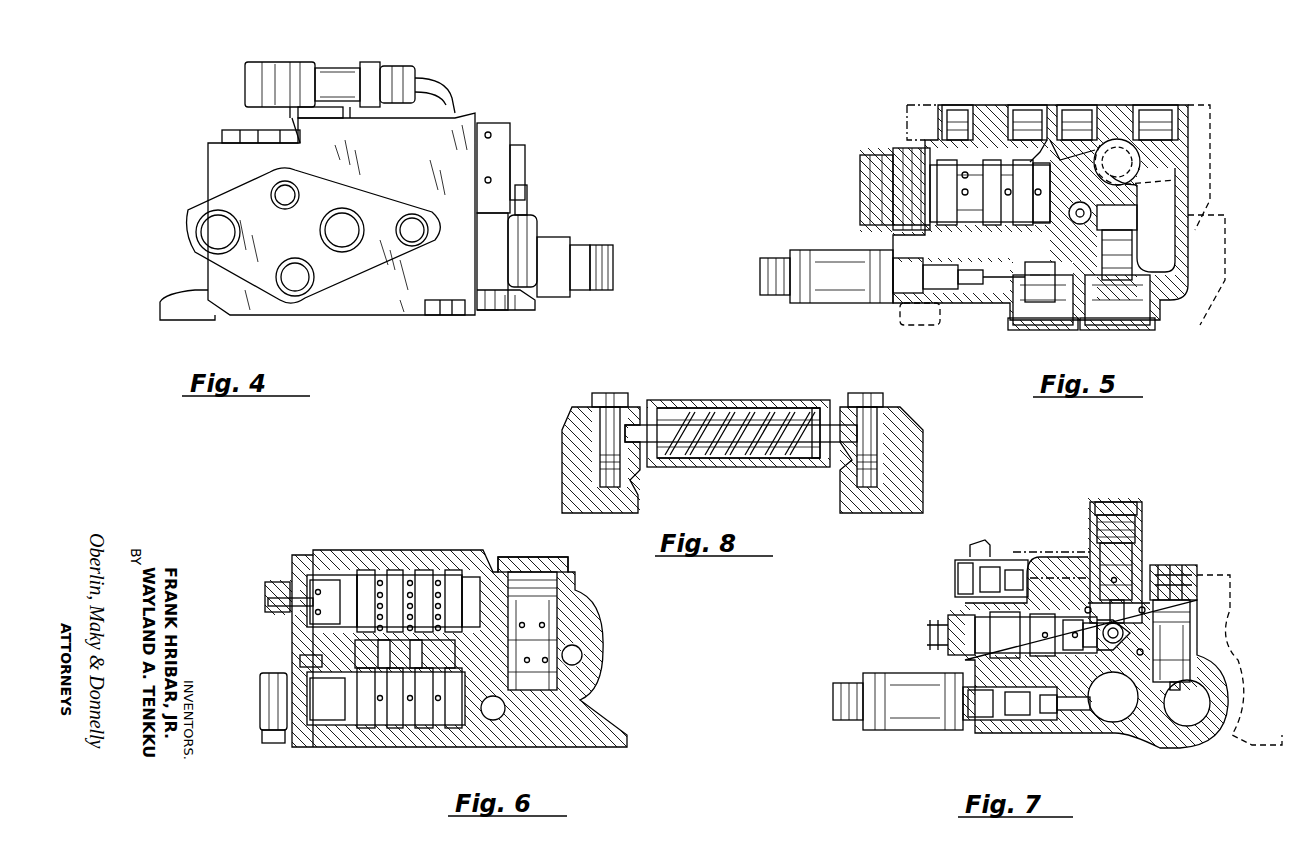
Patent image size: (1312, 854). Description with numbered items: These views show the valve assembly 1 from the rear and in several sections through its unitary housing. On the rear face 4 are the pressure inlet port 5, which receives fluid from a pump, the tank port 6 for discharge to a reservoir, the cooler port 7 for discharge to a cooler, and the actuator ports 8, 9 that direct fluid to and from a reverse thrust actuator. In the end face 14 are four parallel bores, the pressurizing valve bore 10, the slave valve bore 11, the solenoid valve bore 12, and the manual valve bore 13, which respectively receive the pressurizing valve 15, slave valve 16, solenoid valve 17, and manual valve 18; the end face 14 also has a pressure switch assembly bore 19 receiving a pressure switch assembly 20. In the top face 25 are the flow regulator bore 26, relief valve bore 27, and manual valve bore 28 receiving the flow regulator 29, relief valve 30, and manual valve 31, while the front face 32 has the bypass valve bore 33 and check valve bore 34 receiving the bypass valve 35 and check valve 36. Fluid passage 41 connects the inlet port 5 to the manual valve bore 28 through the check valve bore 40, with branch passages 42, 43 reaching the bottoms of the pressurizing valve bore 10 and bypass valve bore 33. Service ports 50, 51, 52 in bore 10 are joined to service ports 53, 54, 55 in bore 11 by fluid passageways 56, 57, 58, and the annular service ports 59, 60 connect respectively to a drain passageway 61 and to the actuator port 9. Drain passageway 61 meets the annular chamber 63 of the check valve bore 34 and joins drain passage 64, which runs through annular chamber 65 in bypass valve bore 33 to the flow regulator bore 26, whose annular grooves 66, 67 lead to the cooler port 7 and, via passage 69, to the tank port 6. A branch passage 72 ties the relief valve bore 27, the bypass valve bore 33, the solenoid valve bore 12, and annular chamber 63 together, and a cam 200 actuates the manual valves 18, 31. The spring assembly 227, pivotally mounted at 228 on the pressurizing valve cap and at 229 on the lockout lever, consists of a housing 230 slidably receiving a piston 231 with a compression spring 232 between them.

In FIG. 4, the valve assembly 1 is at (482, 102).
In FIG. 4, the rear face 4 is at (378, 300).
In FIG. 4, the pressure inlet port 5 is at (303, 292).
In FIG. 5, the pressure inlet port 5 is at (1080, 104).
In FIG. 4, the tank port 6 is at (200, 220).
In FIG. 5, the tank port 6 is at (1155, 104).
In FIG. 4, the cooler port 7 is at (280, 188).
In FIG. 4, the actuator port 8 is at (350, 210).
In FIG. 5, the actuator port 8 is at (962, 104).
In FIG. 4, the actuator port 9 is at (423, 236).
In FIG. 5, the actuator port 9 is at (1032, 104).
In FIG. 4, the pressure switch assembly 20 is at (350, 58).
In FIG. 7, the pressure switch assembly 20 is at (950, 567).
In FIG. 5, the pressurizing valve 15 is at (893, 145).
In FIG. 6, the pressurizing valve 15 is at (398, 742).
In FIG. 5, the fluid passage 41 is at (1050, 135).
In FIG. 5, the flow regulator bore 26 is at (1120, 138).
In FIG. 6, the flow regulator bore 26 is at (575, 610).
In FIG. 5, the passage 69 is at (1175, 163).
In FIG. 6, the passage 69 is at (582, 653).
In FIG. 5, the branch passage 43 is at (1160, 192).
In FIG. 5, the drain passage 64 is at (893, 232).
In FIG. 6, the drain passage 64 is at (545, 700).
In FIG. 5, the annular chamber 65 is at (1140, 240).
In FIG. 5, the bypass valve bore 33 is at (1160, 270).
In FIG. 7, the bypass valve bore 33 is at (1180, 748).
In FIG. 5, the bypass valve 35 is at (1165, 296).
In FIG. 5, the solenoid valve 17 is at (870, 306).
In FIG. 7, the solenoid valve 17 is at (948, 732).
In FIG. 5, the front face 32 is at (975, 303).
In FIG. 5, the check valve 36 is at (1020, 326).
In FIG. 5, the check valve bore 34 is at (1090, 326).
In FIG. 7, the check valve bore 34 is at (1118, 722).
In FIG. 5, the check valve bore 40 is at (1065, 210).
In FIG. 5, the branch passage 42 is at (1045, 220).
In FIG. 6, the branch passage 42 is at (482, 737).
In FIG. 5, the annular service port 59 is at (958, 220).
In FIG. 6, the annular service port 59 is at (385, 745).
In FIG. 5, the drain passageway 61 is at (1000, 222).
In FIG. 5, the annular chamber 63 is at (1055, 275).
In FIG. 8, the spring assembly 227 is at (720, 395).
In FIG. 6, the spring assembly 227 is at (256, 700).
In FIG. 8, the pivotal mounting 228 is at (872, 393).
In FIG. 8, the pivotal mounting 229 is at (610, 393).
In FIG. 8, the housing 230 is at (672, 462).
In FIG. 8, the piston 231 is at (768, 406).
In FIG. 8, the compression spring 232 is at (816, 406).
In FIG. 6, the end face 14 is at (340, 558).
In FIG. 7, the end face 14 is at (975, 670).
In FIG. 6, the slave valve 16 is at (392, 568).
In FIG. 6, the service port 55 is at (360, 566).
In FIG. 6, the annular service port 60 is at (380, 568).
In FIG. 6, the service port 54 is at (398, 568).
In FIG. 6, the slave valve bore 11 is at (428, 568).
In FIG. 6, the service port 53 is at (450, 568).
In FIG. 6, the top face 25 is at (478, 570).
In FIG. 6, the flow regulator 29 is at (583, 636).
In FIG. 6, the annular groove 67 is at (585, 670).
In FIG. 6, the annular groove 66 is at (470, 612).
In FIG. 6, the fluid passageway 56 is at (430, 645).
In FIG. 6, the fluid passageway 57 is at (420, 655).
In FIG. 6, the fluid passageway 58 is at (300, 658).
In FIG. 6, the pressurizing valve bore 10 is at (375, 728).
In FIG. 6, the service port 52 is at (352, 732).
In FIG. 6, the service port 51 is at (425, 740).
In FIG. 6, the service port 50 is at (455, 738).
In FIG. 7, the manual valve 31 is at (1145, 508).
In FIG. 7, the manual valve bore 28 is at (1142, 532).
In FIG. 7, the pressure switch assembly bore 19 is at (1006, 557).
In FIG. 7, the manual valve bore 13 is at (1040, 655).
In FIG. 7, the manual valve 18 is at (1015, 655).
In FIG. 7, the cam 200 is at (1111, 641).
In FIG. 7, the relief valve 30 is at (1200, 611).
In FIG. 7, the relief valve bore 27 is at (1197, 632).
In FIG. 7, the branch passage 72 is at (1180, 670).
In FIG. 7, the solenoid valve bore 12 is at (1005, 722).